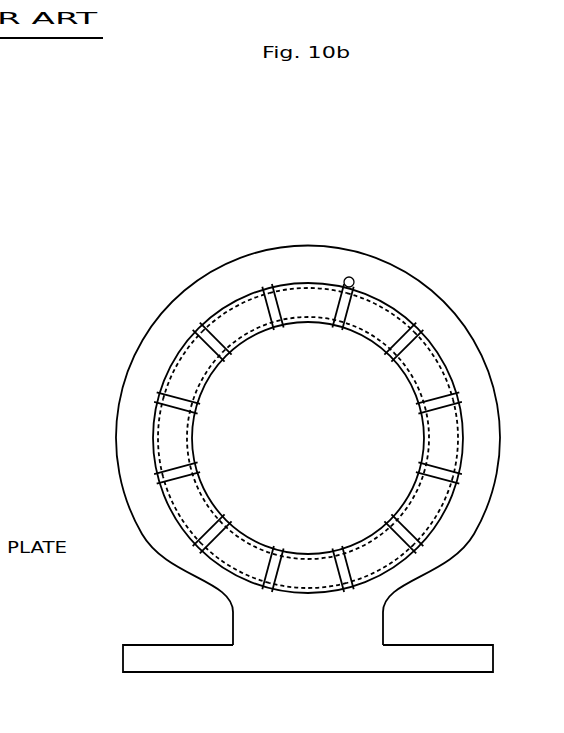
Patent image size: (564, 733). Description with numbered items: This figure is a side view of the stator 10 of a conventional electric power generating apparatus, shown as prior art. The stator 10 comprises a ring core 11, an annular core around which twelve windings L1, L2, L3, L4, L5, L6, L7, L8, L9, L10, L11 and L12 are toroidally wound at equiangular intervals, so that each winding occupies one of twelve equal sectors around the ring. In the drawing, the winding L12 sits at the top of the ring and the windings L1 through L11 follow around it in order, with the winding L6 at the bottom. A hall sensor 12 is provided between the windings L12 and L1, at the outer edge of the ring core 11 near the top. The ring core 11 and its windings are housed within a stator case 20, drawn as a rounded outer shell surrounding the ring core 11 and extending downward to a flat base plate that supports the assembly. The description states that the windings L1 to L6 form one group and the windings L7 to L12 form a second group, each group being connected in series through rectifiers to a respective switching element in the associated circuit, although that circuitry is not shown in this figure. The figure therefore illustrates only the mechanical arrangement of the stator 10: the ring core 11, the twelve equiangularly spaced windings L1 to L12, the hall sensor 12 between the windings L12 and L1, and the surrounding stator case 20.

The stator 10 is at (325, 162).
The ring core 11 is at (157, 477).
The hall sensor 12 is at (352, 279).
The stator case 20 is at (272, 252).
The winding L1 is at (391, 318).
The winding L2 is at (438, 358).
The winding L3 is at (447, 436).
The winding L4 is at (428, 506).
The winding L5 is at (380, 555).
The winding L6 is at (308, 567).
The winding L7 is at (240, 557).
The winding L8 is at (193, 507).
The winding L9 is at (182, 440).
The winding L10 is at (195, 367).
The winding L11 is at (232, 302).
The winding L12 is at (308, 305).